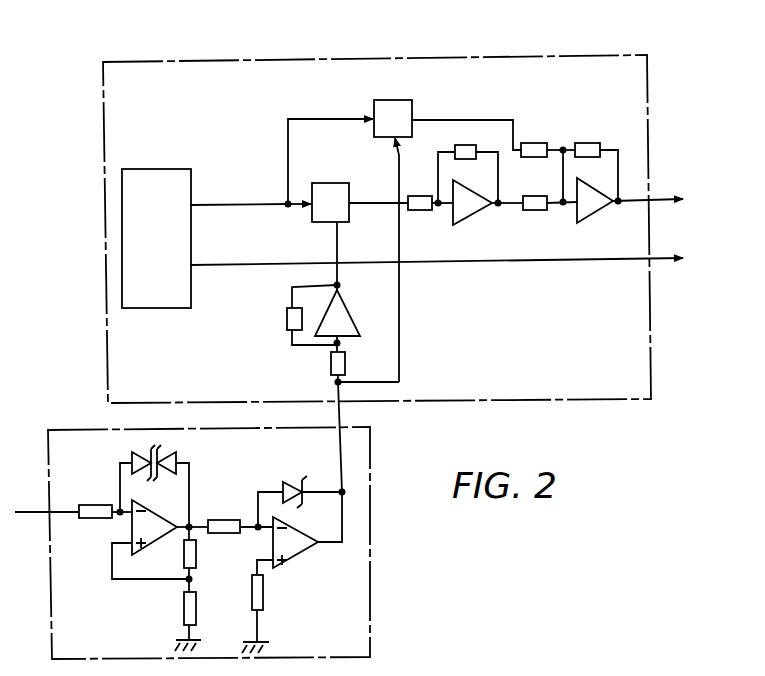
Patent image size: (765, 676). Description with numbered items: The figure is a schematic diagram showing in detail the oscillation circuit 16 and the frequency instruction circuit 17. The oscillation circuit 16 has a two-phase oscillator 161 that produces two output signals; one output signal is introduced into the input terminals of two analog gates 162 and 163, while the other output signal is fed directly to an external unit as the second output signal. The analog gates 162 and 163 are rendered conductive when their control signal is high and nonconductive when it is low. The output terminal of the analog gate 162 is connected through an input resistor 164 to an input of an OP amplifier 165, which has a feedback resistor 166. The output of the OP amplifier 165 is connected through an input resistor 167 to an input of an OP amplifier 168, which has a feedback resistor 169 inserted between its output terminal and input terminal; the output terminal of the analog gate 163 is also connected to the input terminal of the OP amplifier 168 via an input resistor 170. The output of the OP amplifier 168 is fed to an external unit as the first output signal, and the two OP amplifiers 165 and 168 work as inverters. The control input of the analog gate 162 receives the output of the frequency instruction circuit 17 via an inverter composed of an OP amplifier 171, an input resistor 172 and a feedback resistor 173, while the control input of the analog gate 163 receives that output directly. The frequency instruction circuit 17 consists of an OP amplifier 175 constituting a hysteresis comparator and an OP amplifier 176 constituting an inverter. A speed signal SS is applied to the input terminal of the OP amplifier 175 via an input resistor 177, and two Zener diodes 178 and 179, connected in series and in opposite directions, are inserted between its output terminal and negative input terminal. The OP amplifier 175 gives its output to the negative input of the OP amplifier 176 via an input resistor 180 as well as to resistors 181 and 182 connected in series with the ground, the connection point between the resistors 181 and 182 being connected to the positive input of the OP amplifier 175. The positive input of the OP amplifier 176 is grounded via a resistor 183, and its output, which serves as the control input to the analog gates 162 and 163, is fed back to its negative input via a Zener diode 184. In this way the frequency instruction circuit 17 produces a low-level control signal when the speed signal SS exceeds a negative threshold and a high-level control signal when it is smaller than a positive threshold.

The oscillation circuit 16 is at (651, 310).
The frequency instruction circuit 17 is at (372, 545).
The two-phase oscillator 161 is at (168, 308).
The analog gate 162 is at (330, 183).
The analog gate 163 is at (400, 100).
The input resistor 164 is at (420, 210).
The OP amplifier 165 is at (472, 214).
The feedback resistor 166 is at (465, 145).
The input resistor 167 is at (535, 210).
The OP amplifier 168 is at (592, 214).
The feedback resistor 169 is at (585, 143).
The input resistor 170 is at (533, 143).
The OP amplifier 171 is at (352, 293).
The input resistor 172 is at (352, 356).
The feedback resistor 173 is at (287, 320).
The OP amplifier 175 is at (158, 540).
The OP amplifier 176 is at (300, 553).
The input resistor 177 is at (92, 505).
The Zener diode 178 is at (131, 455).
The Zener diode 179 is at (177, 456).
The input resistor 180 is at (215, 533).
The resistor 181 is at (196, 555).
The resistor 182 is at (184, 612).
The resistor 183 is at (263, 592).
The Zener diode 184 is at (298, 482).